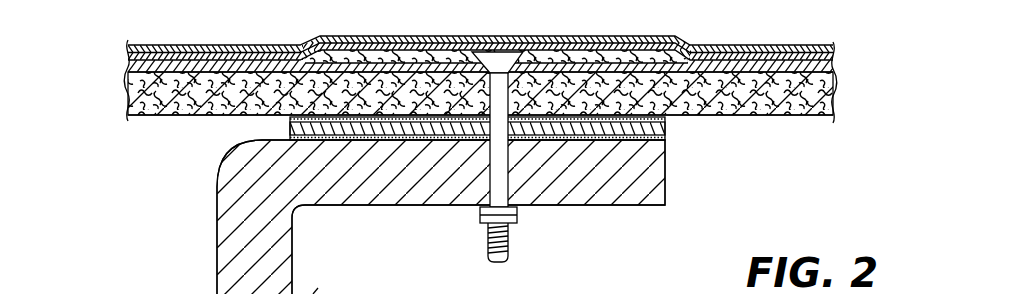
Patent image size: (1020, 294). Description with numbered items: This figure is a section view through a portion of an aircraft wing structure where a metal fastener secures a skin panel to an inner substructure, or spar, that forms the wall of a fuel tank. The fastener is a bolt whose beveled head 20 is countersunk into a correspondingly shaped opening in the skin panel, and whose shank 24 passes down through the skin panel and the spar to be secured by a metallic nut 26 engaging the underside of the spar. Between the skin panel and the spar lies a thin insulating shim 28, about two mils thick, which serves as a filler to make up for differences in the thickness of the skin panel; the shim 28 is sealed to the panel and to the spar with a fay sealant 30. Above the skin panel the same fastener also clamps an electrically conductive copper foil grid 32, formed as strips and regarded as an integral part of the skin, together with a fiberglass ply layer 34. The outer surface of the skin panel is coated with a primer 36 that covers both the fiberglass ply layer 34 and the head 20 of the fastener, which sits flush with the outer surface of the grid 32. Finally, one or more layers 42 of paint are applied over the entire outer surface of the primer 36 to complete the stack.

The beveled head 20 is at (620, 142).
The shank 24 is at (502, 162).
The metallic nut 26 is at (483, 225).
The shim 28 is at (666, 123).
The fay sealant 30 is at (290, 118).
The copper foil grid 32 is at (302, 52).
The fiberglass ply layer 34 is at (126, 69).
The primer 36 is at (125, 59).
The layers of paint 42 is at (127, 46).